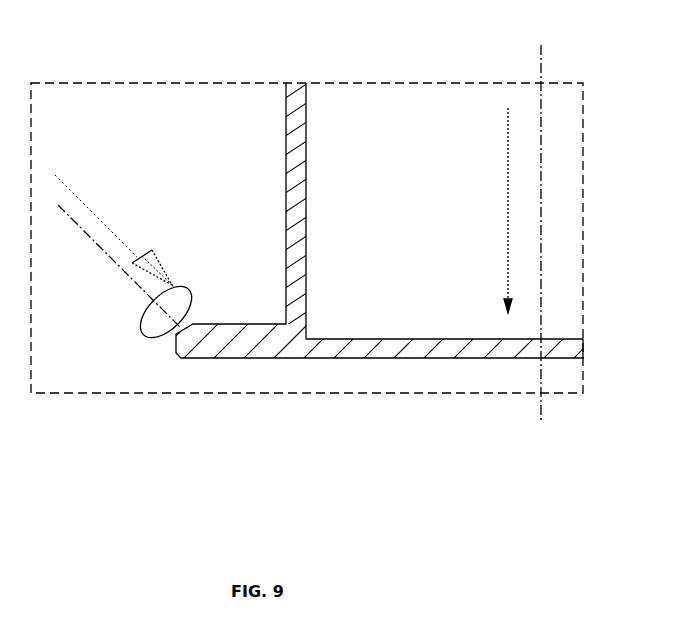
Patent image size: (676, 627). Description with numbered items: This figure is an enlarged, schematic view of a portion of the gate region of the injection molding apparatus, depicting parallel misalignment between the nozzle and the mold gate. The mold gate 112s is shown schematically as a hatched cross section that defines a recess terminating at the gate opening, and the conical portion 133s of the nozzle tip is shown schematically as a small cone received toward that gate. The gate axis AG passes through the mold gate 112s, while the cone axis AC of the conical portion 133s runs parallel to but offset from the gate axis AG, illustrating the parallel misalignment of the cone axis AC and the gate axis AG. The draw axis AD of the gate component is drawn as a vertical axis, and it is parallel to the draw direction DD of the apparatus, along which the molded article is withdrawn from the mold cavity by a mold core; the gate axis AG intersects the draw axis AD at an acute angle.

The mold gate 112s is at (186, 302).
The conical portion 133s is at (153, 254).
The cone axis AC is at (100, 218).
The gate axis AG is at (82, 229).
The draw axis AD is at (535, 151).
The draw direction DD is at (505, 210).